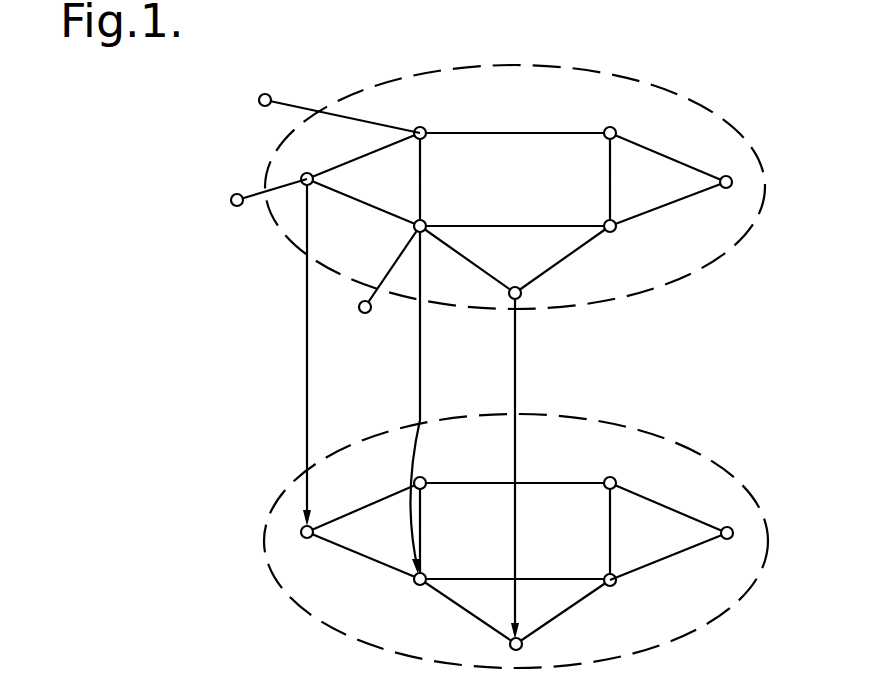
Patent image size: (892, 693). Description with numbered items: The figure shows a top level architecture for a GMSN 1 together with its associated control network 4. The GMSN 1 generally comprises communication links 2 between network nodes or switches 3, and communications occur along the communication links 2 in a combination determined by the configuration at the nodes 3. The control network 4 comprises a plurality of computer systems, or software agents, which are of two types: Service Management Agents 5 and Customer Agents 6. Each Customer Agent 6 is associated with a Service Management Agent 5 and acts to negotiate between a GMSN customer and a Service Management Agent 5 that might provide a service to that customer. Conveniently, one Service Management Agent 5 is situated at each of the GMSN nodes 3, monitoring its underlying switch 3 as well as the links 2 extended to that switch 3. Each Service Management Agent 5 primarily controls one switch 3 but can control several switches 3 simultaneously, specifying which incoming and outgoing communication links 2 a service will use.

The GMSN 1 is at (708, 462).
The communication links 2 is at (672, 558).
The network nodes or switches 3 is at (568, 648).
The control network 4 is at (703, 107).
The Service Management Agent 5 is at (651, 256).
The Customer Agent 6 is at (231, 202).